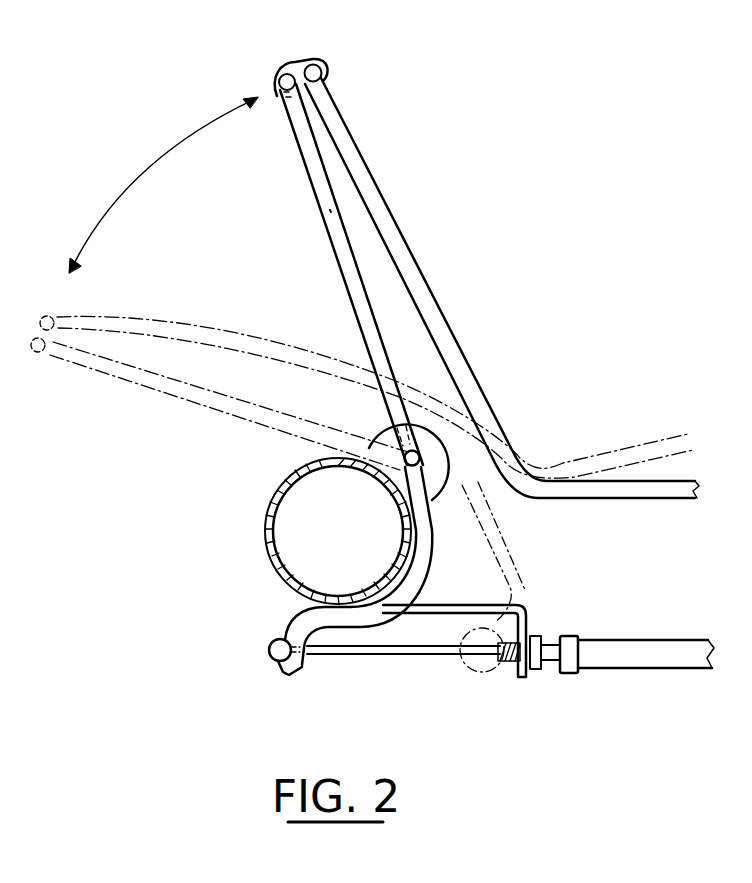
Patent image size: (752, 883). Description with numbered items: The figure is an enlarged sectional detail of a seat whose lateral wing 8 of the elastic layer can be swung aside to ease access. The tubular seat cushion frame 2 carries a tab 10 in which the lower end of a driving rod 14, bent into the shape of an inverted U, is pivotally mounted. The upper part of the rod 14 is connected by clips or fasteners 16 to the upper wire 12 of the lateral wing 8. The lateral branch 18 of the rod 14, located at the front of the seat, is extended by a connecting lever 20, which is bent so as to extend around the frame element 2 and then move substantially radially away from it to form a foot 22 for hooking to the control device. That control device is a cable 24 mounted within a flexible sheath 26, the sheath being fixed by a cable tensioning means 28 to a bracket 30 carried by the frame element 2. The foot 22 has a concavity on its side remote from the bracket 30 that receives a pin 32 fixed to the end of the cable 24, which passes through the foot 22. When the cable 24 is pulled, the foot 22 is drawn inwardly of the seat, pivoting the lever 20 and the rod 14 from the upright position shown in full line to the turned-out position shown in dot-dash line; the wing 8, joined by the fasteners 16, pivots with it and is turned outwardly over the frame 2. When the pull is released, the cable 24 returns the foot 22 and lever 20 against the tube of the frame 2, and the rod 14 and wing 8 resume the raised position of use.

The seat cushion frame 2 is at (265, 546).
The lateral wing 8 is at (372, 198).
The tab 10 is at (432, 443).
The upper wire 12 is at (318, 66).
The rod 14 is at (309, 160).
The fasteners 16 is at (292, 66).
The lateral branch 18 is at (330, 210).
The connecting lever 20 is at (425, 546).
The foot 22 is at (300, 665).
The cable 24 is at (390, 654).
The flexible sheath 26 is at (645, 656).
The cable tensioning means 28 is at (548, 669).
The bracket 30 is at (492, 625).
The pin 32 is at (270, 641).